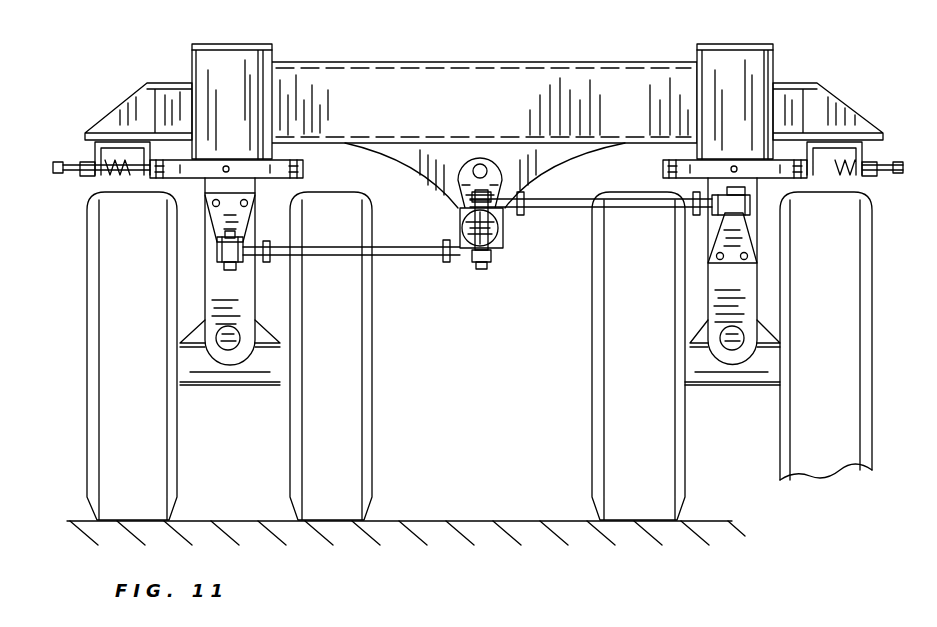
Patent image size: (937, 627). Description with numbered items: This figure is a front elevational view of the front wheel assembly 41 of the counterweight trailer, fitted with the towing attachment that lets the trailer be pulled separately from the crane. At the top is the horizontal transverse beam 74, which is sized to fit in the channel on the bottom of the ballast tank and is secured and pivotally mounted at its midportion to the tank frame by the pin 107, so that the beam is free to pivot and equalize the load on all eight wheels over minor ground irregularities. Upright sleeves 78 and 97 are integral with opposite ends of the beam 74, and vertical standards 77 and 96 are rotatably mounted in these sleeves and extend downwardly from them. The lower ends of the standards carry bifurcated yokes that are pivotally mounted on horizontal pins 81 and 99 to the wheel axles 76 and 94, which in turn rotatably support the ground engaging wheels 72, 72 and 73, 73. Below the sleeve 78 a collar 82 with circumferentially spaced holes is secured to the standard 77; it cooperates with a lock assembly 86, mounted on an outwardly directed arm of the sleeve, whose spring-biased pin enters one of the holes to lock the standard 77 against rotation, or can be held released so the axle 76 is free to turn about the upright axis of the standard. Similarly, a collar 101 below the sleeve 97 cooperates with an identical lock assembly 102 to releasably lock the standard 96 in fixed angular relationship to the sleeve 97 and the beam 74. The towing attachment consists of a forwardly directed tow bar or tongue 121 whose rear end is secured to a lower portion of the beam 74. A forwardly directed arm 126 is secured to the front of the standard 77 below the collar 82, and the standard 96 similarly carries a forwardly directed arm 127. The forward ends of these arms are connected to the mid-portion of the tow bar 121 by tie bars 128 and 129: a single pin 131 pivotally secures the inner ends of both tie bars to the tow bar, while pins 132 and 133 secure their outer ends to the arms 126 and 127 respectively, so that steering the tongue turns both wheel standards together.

The wheel assembly 41 is at (130, 100).
The ground engaging wheels 72 is at (305, 487).
The ground engaging wheels 73 is at (810, 445).
The horizontal transverse beam 74 is at (410, 80).
The wheel axle 76 is at (262, 375).
The vertical standard 77 is at (243, 302).
The upright sleeve 78 is at (262, 62).
The horizontal pin 81 is at (228, 342).
The collar 82 is at (303, 170).
The lock assembly 86 is at (55, 140).
The wheel axle 94 is at (705, 375).
The vertical standard 96 is at (745, 302).
The upright sleeve 97 is at (752, 72).
The horizontal pin 99 is at (740, 345).
The collar 101 is at (663, 167).
The lock assembly 102 is at (896, 106).
The pin 107 is at (480, 165).
The tow bar 121 is at (460, 216).
The forwardly directed arm 126 is at (220, 215).
The forwardly directed arm 127 is at (718, 245).
The tie bar 128 is at (392, 260).
The tie bar 129 is at (580, 210).
The pin 131 is at (482, 272).
The pin 132 is at (228, 272).
The pin 133 is at (735, 243).